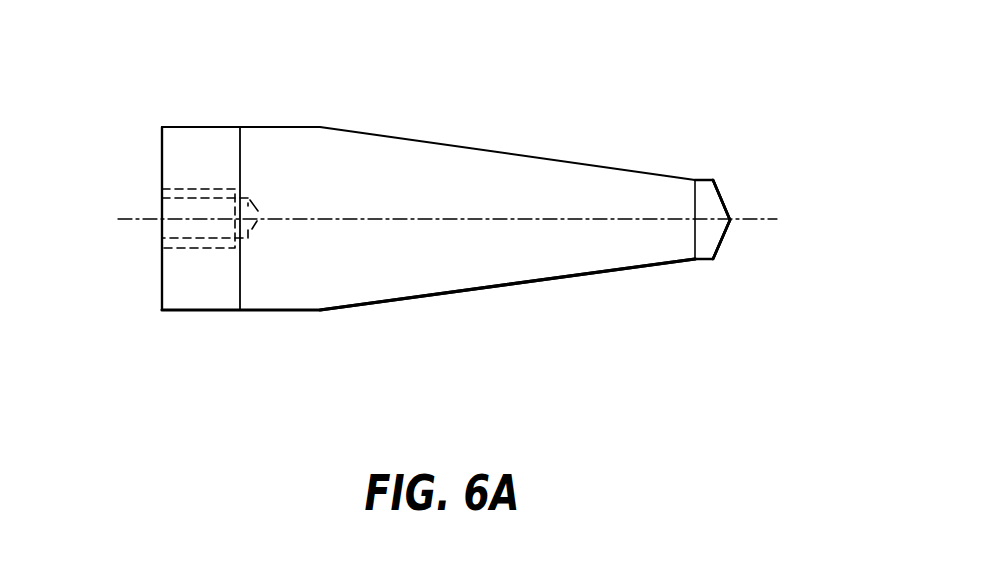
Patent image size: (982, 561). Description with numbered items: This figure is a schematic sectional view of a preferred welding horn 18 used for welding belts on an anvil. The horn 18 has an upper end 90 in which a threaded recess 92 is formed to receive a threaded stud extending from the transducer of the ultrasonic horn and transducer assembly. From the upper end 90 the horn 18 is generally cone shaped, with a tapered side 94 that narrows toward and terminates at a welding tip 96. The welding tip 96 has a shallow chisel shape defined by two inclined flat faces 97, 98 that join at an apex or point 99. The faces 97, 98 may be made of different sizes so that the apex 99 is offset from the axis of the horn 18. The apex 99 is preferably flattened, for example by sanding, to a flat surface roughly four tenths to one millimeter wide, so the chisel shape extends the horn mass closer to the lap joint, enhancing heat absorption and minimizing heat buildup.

The welding horn 18 is at (511, 114).
The upper end 90 is at (162, 157).
The threaded recess 92 is at (183, 237).
The tapered side 94 is at (493, 288).
The welding tip 96 is at (760, 198).
The inclined flat face 97 is at (724, 196).
The inclined flat face 98 is at (720, 248).
The apex 99 is at (730, 220).